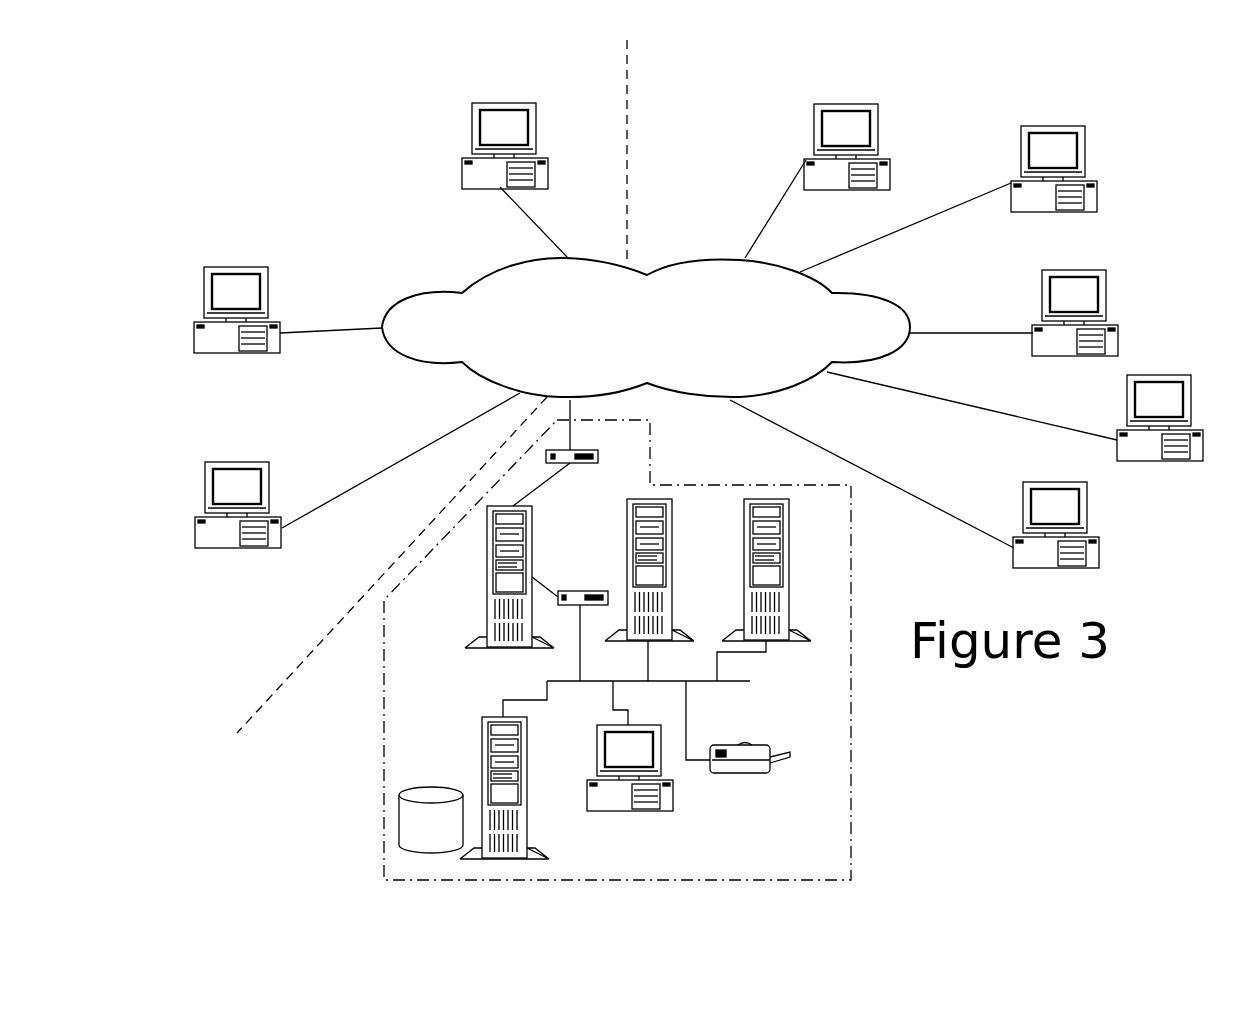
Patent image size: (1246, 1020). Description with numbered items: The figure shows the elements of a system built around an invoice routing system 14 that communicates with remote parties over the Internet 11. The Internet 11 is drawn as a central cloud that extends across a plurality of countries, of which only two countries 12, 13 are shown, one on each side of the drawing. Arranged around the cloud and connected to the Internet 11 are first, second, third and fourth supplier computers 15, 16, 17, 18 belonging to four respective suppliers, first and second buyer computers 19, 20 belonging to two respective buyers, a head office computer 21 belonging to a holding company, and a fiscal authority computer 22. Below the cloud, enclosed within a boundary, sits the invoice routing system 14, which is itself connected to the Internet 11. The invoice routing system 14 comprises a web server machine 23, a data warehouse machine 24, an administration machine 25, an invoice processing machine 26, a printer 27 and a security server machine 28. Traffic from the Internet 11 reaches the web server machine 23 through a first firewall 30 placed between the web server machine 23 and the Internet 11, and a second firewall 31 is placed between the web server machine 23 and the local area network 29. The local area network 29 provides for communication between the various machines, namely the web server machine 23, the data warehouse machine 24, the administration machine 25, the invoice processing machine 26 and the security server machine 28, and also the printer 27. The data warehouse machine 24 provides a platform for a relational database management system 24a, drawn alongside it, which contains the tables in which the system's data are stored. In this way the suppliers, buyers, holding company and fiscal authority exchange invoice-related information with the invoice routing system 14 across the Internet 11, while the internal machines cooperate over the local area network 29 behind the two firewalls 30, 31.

The Internet 11 is at (865, 300).
The country 12 is at (1123, 255).
The country 13 is at (346, 210).
The invoice routing system 14 is at (852, 635).
The first supplier computer 15 is at (1098, 545).
The second supplier computer 16 is at (235, 485).
The third supplier computer 17 is at (1160, 397).
The fourth supplier computer 18 is at (238, 288).
The first buyer computer 19 is at (1100, 292).
The second buyer computer 20 is at (504, 123).
The head office computer 21 is at (1083, 170).
The fiscal authority computer 22 is at (847, 125).
The web server machine 23 is at (508, 574).
The data warehouse machine 24 is at (488, 770).
The relational database management system 24a is at (399, 822).
The administration machine 25 is at (668, 790).
The invoice processing machine 26 is at (650, 569).
The printer 27 is at (740, 760).
The security server machine 28 is at (766, 588).
The local area network 29 is at (750, 681).
The first firewall 30 is at (598, 463).
The second firewall 31 is at (585, 591).